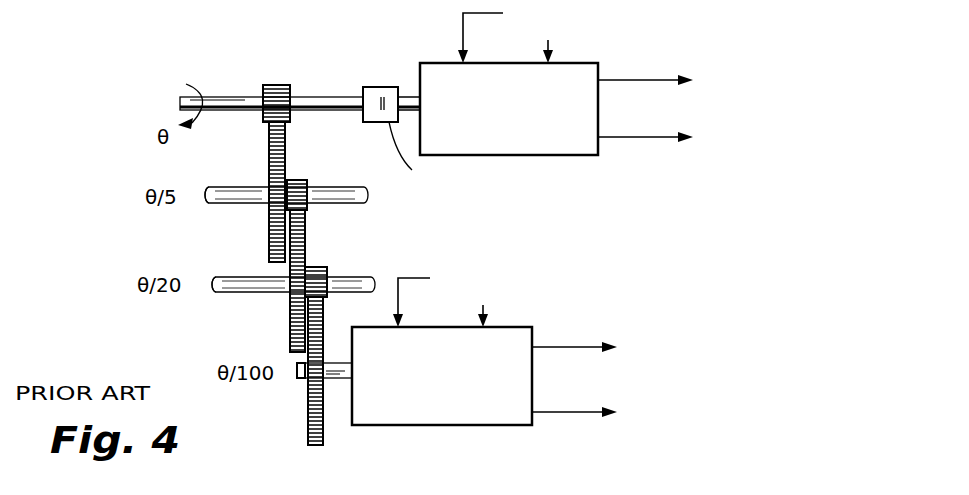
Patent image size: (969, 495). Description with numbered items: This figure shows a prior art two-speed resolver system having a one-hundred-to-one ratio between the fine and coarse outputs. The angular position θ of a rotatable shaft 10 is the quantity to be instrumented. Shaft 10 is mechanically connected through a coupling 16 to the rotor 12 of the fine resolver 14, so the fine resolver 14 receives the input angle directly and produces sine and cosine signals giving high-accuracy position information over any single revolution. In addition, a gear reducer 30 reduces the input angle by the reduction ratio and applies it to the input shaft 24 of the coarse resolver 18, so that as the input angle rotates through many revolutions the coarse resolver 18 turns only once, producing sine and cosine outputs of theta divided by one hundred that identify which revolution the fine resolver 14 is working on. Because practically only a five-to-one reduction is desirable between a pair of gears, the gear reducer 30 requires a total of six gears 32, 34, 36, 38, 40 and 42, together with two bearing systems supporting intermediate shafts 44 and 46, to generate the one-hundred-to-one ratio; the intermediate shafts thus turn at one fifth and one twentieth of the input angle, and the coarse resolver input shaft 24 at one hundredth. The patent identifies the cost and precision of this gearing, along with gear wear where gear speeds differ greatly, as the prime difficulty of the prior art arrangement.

The rotatable shaft 10 is at (303, 97).
The rotor 12 is at (409, 97).
The fine resolver 14 is at (582, 63).
The coupling 16 is at (376, 87).
The coarse resolver 18 is at (490, 425).
The input shaft 24 is at (346, 380).
The gear reducer 30 is at (299, 265).
The gear 32 is at (291, 117).
The gear 34 is at (269, 147).
The gear 36 is at (305, 180).
The gear 38 is at (305, 258).
The gear 40 is at (327, 270).
The gear 42 is at (324, 320).
The shaft 44 is at (216, 188).
The shaft 46 is at (226, 277).